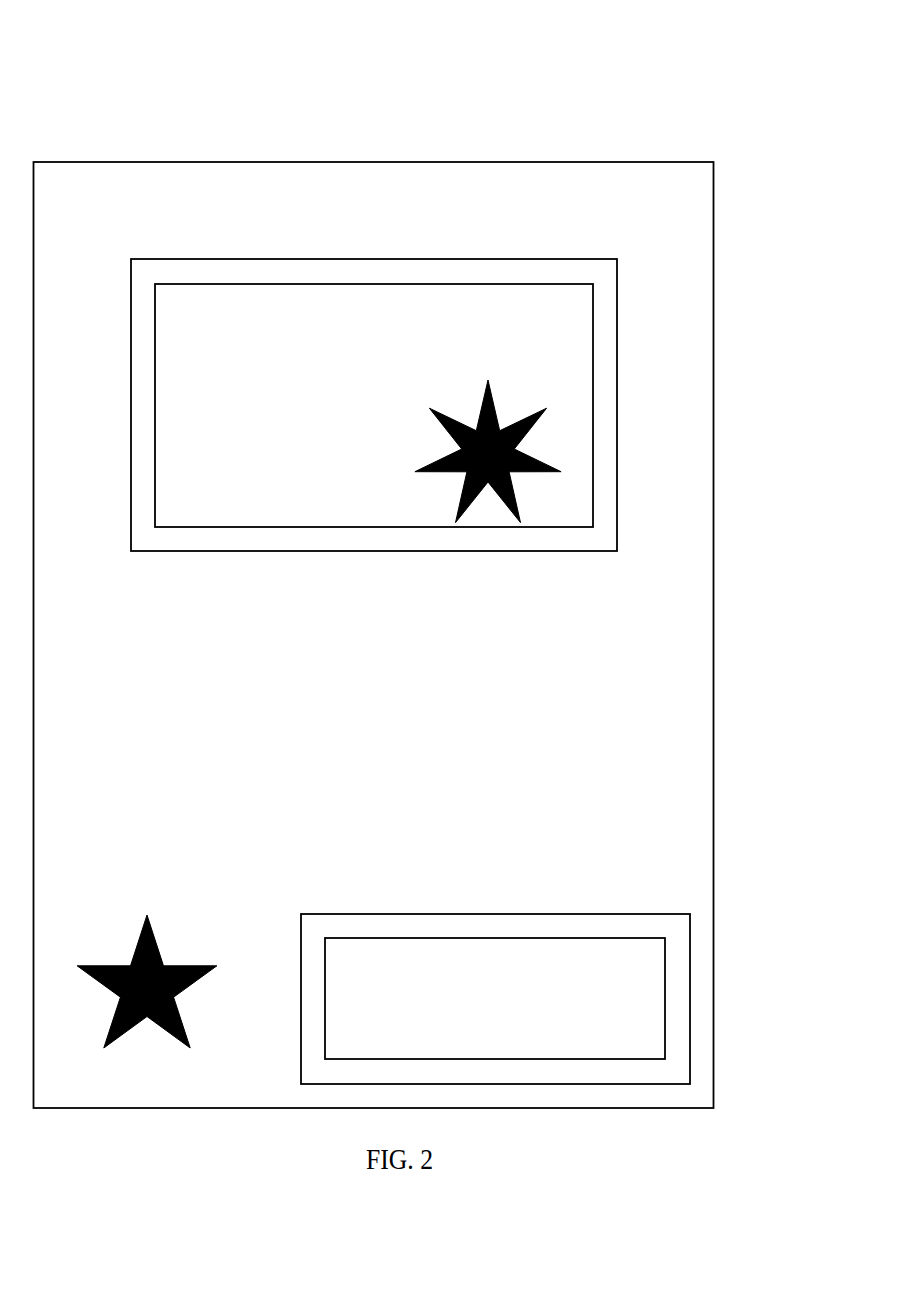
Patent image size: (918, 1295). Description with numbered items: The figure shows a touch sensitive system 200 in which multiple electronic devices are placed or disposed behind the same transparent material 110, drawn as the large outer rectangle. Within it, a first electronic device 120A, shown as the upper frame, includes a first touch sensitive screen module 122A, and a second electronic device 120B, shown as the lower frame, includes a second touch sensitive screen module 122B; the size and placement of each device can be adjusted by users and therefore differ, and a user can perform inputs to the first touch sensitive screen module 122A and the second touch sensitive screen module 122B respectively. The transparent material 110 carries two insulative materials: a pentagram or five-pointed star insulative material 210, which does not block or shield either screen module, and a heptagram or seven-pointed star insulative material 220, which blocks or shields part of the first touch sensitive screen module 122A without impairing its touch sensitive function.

The touch sensitive system 200 is at (664, 90).
The transparent material 110 is at (714, 673).
The first electronic device 120A is at (155, 552).
The first touch sensitive screen module 122A is at (325, 528).
The seven-pointed star insulative material 220 is at (518, 518).
The five-pointed star insulative material 210 is at (147, 918).
The second electronic device 120B is at (325, 914).
The second touch sensitive screen module 122B is at (494, 938).